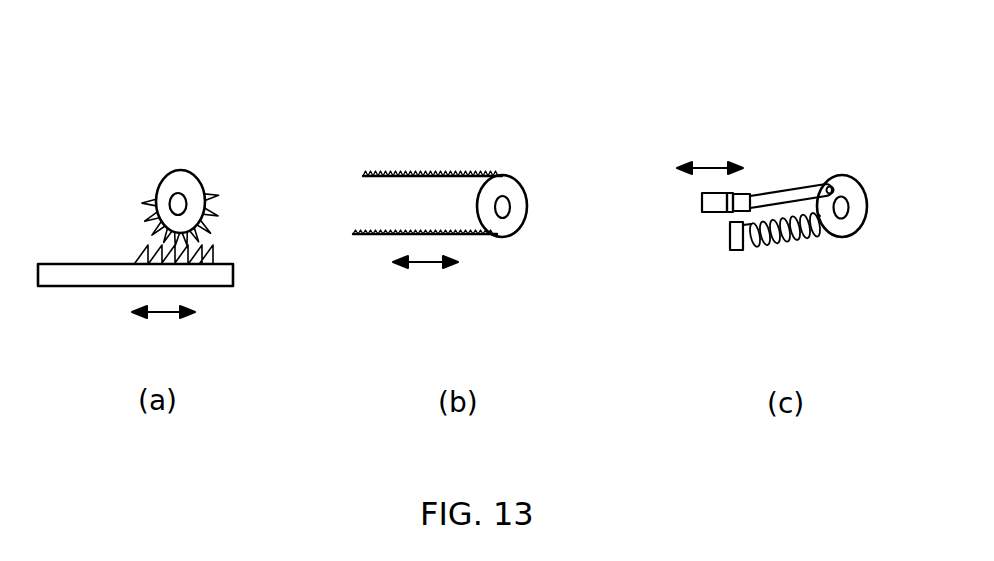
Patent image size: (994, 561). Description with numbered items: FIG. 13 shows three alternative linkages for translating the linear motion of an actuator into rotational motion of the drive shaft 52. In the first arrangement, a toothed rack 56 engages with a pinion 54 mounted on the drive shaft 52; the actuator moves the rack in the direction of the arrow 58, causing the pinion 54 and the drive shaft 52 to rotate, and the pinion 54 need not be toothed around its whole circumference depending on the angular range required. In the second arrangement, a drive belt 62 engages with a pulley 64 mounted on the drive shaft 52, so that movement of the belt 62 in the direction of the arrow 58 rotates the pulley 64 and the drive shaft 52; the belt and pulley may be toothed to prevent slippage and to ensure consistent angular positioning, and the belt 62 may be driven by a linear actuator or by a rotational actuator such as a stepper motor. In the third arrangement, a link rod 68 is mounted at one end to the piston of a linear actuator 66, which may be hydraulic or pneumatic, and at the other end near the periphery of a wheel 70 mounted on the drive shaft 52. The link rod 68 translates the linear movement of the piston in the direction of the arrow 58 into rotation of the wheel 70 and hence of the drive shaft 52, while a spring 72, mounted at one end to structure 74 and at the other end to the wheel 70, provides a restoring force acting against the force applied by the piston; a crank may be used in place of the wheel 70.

The drive shaft 52 is at (186, 194).
The pinion 54 is at (182, 172).
The toothed rack 56 is at (97, 264).
The arrow 58 is at (165, 322).
The drive belt 62 is at (410, 172).
The pulley 64 is at (500, 174).
The linear actuator 66 is at (713, 213).
The link rod 68 is at (783, 192).
The wheel 70 is at (838, 177).
The spring 72 is at (790, 240).
The structure 74 is at (735, 252).